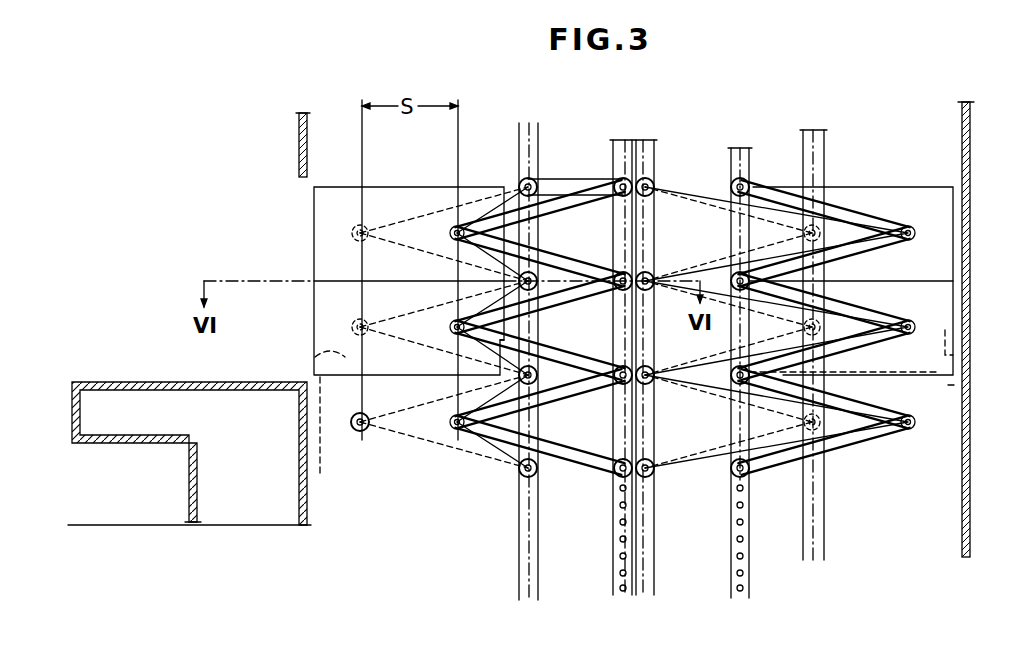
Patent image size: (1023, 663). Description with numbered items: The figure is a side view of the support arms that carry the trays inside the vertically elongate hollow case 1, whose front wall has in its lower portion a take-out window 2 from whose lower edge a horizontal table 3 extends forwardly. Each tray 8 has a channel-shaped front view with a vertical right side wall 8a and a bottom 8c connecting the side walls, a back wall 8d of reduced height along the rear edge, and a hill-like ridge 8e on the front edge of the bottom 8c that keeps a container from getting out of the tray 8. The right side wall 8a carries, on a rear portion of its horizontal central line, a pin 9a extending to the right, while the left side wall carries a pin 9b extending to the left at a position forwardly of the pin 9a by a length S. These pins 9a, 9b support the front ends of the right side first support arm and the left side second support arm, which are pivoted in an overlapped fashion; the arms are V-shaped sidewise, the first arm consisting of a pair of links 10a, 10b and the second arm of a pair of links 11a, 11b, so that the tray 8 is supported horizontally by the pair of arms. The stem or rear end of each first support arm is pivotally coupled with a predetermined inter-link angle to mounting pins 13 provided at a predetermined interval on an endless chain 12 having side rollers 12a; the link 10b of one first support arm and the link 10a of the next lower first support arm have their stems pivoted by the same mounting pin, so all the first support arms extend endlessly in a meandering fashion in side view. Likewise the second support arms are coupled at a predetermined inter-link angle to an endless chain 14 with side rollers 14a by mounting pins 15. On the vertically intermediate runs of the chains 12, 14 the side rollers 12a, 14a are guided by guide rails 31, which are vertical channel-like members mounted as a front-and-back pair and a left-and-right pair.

The hollow case 1 is at (968, 140).
The take-out window 2 is at (298, 176).
The horizontal table 3 is at (122, 382).
The tray 8 is at (374, 187).
The right side wall 8a is at (322, 207).
The bottom 8c is at (330, 356).
The back wall 8d is at (955, 335).
The hill-like ridge 8e is at (322, 440).
The pin 9a is at (460, 226).
The pin 9b is at (356, 225).
The link 10a is at (580, 185).
The link 10b is at (560, 258).
The link 11a is at (407, 205).
The link 11b is at (340, 254).
The endless chain 12 is at (620, 590).
The side roller 12a is at (620, 178).
The mounting pin 13 is at (612, 178).
The endless chain 14 is at (518, 590).
The side roller 14a is at (548, 180).
The mounting pin 15 is at (522, 180).
The guide rail 31 is at (632, 140).